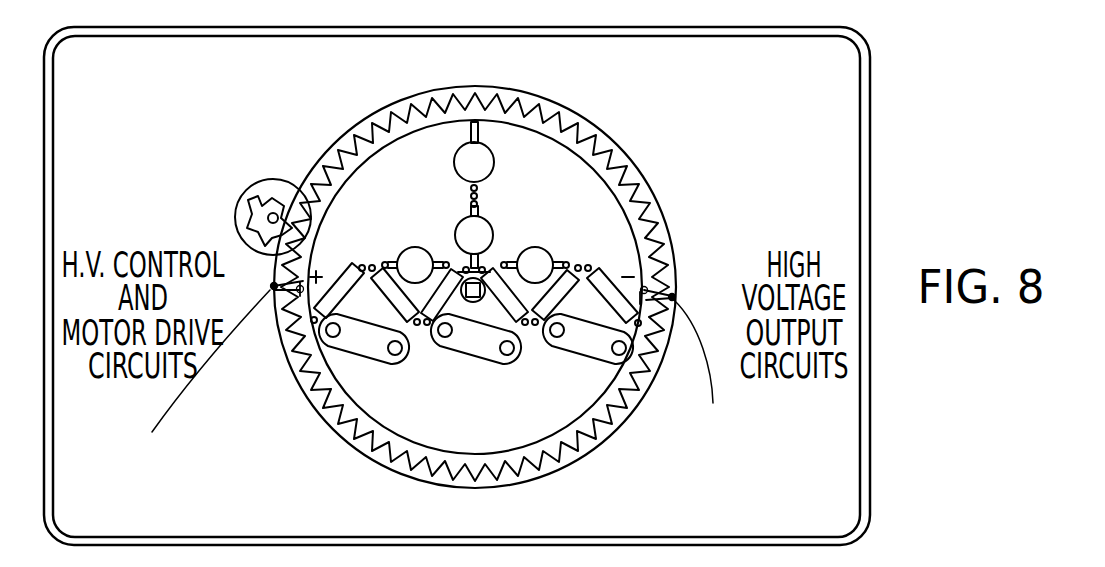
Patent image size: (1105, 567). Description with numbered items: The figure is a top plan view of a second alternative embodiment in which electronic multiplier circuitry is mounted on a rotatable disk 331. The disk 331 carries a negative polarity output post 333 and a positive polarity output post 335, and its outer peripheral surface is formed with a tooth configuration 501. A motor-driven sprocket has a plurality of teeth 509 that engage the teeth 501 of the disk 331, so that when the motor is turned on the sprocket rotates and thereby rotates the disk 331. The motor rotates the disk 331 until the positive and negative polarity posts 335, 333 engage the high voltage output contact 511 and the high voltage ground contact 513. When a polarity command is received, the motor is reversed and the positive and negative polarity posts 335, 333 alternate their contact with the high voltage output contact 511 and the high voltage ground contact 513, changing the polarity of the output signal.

The tooth configuration 501 is at (620, 407).
The disk 331 is at (647, 232).
The teeth 509 is at (268, 180).
The positive polarity output post 335 is at (273, 284).
The negative polarity output post 333 is at (670, 294).
The high voltage ground contact 513 is at (191, 372).
The high voltage output contact 511 is at (708, 367).